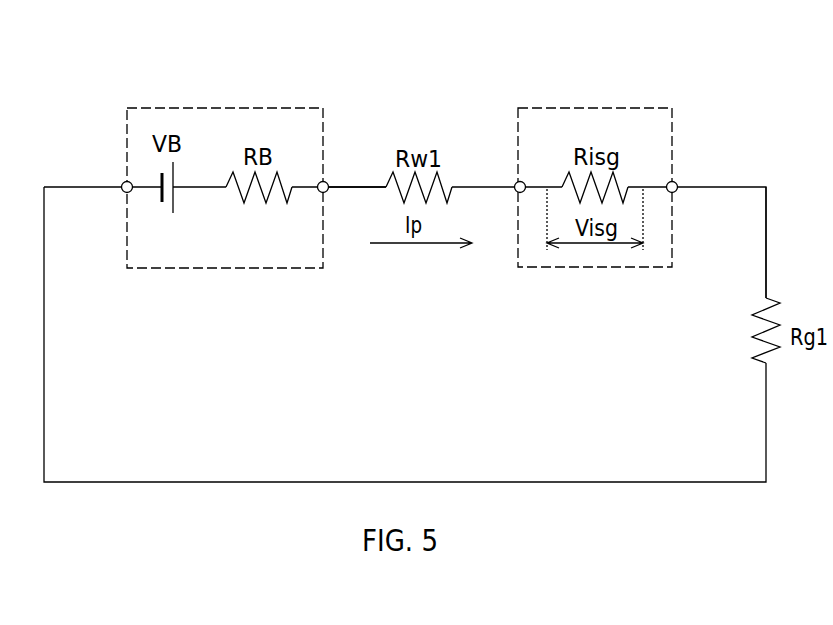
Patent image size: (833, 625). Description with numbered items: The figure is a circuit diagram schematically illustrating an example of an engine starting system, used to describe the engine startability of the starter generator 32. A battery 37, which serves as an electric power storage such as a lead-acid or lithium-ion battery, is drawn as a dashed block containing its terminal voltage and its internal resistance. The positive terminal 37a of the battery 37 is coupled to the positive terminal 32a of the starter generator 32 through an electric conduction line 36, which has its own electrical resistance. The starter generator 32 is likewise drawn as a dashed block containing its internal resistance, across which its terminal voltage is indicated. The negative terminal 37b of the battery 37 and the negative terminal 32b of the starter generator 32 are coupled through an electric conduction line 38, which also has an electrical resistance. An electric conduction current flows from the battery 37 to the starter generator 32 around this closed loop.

The battery 37 is at (169, 97).
The positive terminal 37a is at (327, 183).
The negative terminal 37b is at (123, 183).
The starter generator 32 is at (561, 97).
The positive terminal 32a is at (516, 183).
The negative terminal 32b is at (677, 183).
The electric conduction line 36 is at (358, 189).
The electric conduction line 38 is at (768, 243).